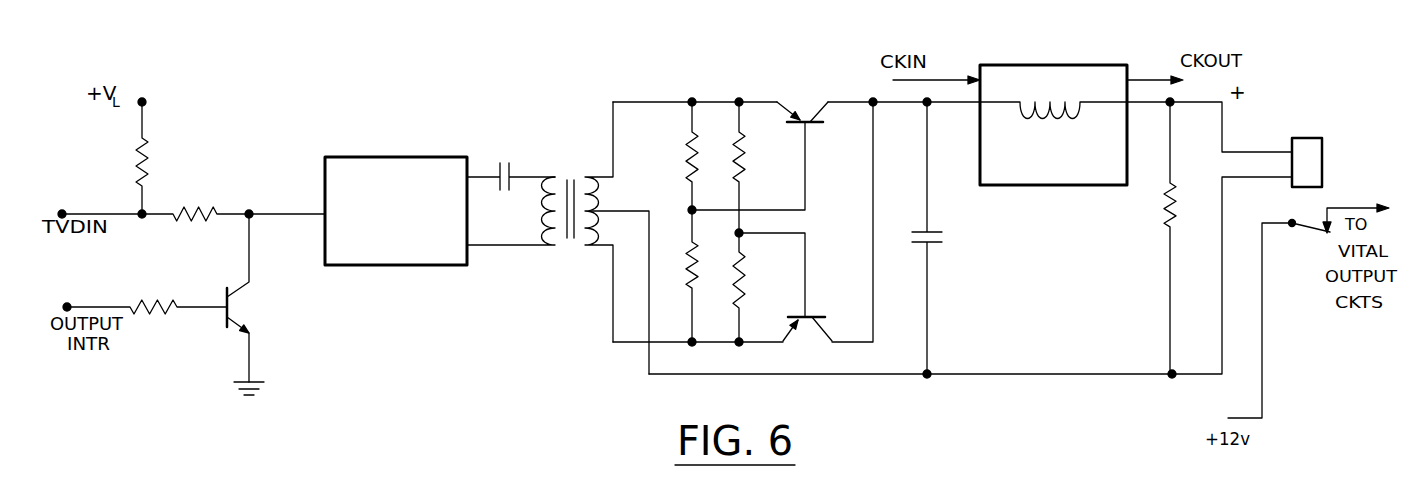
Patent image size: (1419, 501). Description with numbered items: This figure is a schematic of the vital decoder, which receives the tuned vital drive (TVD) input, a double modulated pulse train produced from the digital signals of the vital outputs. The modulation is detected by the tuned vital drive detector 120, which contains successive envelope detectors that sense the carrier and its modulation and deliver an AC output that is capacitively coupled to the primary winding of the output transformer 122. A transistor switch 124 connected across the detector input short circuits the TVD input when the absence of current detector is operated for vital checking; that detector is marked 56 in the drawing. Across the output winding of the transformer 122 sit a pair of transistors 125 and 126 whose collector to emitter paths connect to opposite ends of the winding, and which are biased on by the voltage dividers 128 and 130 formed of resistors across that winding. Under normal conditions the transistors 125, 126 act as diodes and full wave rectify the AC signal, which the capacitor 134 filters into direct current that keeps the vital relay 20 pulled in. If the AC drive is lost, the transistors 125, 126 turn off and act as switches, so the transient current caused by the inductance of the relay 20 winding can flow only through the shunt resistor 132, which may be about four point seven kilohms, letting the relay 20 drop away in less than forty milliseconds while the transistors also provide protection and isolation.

The vital relay 20 is at (1337, 184).
The N3 relay / inductor unit 56 is at (1055, 186).
The tuned vital drive detector 120 is at (385, 157).
The output transformer 122 is at (563, 247).
The transistor switch 124 is at (252, 300).
The transistor 125 is at (815, 122).
The transistor 126 is at (833, 330).
The voltage divider 128 is at (686, 150).
The voltage divider 130 is at (745, 150).
The shunt resistor 132 is at (1160, 225).
The capacitor 134 is at (932, 244).